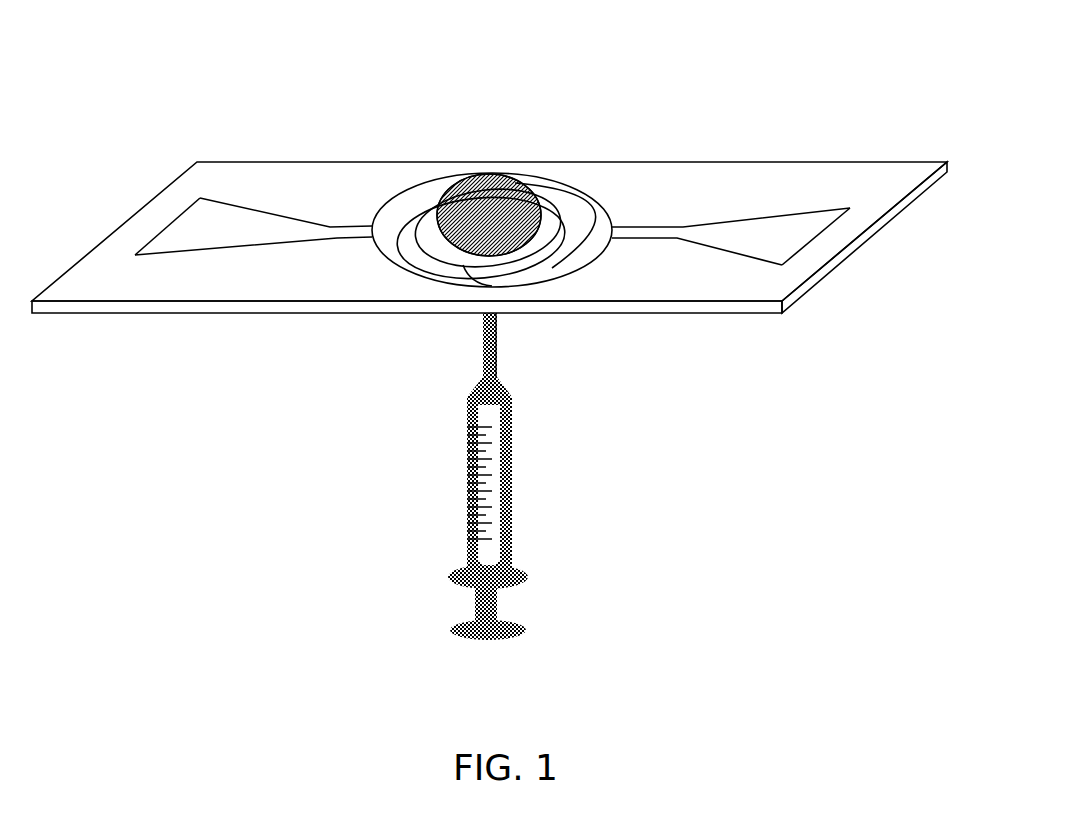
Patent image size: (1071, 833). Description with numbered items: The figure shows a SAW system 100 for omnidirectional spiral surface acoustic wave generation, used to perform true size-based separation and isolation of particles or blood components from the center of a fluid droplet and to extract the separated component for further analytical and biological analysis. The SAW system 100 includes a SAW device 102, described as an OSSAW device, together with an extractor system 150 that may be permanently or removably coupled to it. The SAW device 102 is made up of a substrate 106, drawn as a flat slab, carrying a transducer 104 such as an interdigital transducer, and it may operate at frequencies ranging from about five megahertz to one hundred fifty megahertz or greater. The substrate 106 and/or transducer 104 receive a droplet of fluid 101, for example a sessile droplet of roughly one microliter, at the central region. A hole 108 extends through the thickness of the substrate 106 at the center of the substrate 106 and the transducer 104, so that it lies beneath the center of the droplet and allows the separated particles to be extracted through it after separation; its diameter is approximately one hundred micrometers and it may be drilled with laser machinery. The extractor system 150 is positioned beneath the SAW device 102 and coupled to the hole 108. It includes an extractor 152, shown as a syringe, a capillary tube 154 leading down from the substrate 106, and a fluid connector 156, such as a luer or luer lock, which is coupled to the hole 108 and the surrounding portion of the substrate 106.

The SAW system 100 is at (194, 82).
The fluid 101 is at (513, 195).
The SAW device 102 is at (607, 317).
The transducer 104 is at (387, 245).
The substrate 106 is at (136, 281).
The hole 108 is at (479, 218).
The extractor system 150 is at (520, 476).
The extractor 152 is at (540, 537).
The capillary tube 154 is at (485, 332).
The fluid connector 156 is at (485, 293).